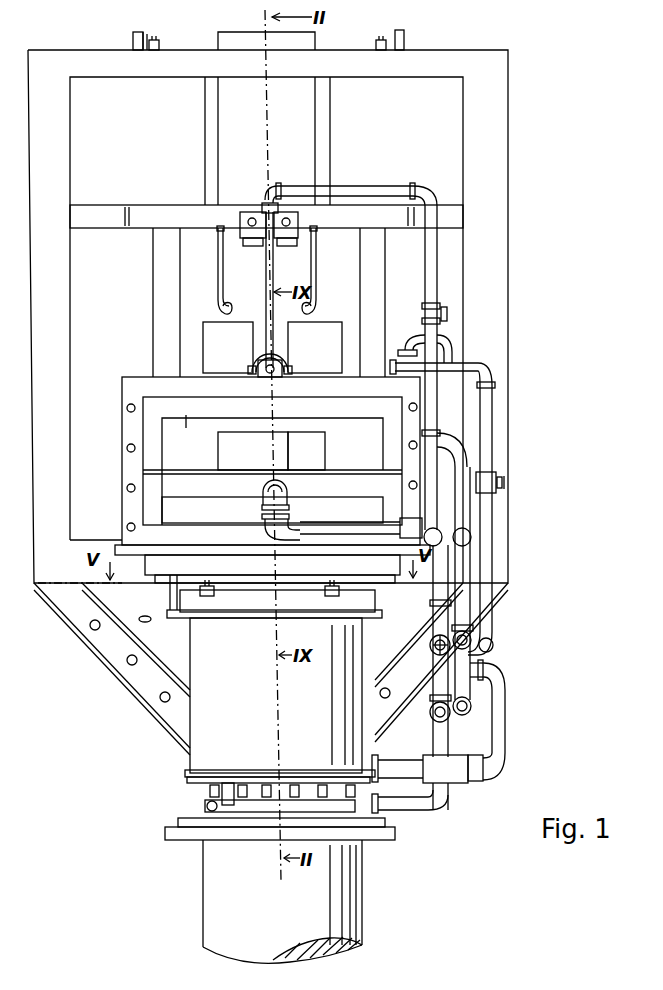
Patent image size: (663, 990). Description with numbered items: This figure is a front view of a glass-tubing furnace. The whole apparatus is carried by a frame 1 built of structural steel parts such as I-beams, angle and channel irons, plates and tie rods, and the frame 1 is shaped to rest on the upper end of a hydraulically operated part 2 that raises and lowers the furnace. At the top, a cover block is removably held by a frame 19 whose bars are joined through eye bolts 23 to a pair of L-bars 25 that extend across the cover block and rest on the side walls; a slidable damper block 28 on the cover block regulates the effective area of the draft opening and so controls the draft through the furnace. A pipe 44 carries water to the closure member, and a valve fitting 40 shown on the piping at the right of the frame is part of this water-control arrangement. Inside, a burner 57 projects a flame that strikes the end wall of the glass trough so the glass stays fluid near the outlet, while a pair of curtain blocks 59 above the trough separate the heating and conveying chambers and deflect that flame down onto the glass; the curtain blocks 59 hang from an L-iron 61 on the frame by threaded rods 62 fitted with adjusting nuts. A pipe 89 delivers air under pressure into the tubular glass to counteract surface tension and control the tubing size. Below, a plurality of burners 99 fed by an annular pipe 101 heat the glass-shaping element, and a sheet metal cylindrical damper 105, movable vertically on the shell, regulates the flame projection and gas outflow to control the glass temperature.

The frame 1 is at (500, 410).
The hydraulically operated part 2 is at (352, 902).
The frame 19 is at (147, 34).
The eye bolts 23 is at (159, 44).
The L-bars 25 is at (133, 40).
The slidable damper block 28 is at (236, 36).
The valve 40 is at (487, 483).
The pipe 44 is at (484, 427).
The burner 57 is at (262, 492).
The curtain blocks 59 is at (208, 340).
The L-iron 61 is at (156, 213).
The rods 62 is at (218, 252).
The pipe 89 is at (266, 262).
The burners 99 is at (210, 785).
The annular pipe 101 is at (205, 806).
The cylindrical damper 105 is at (215, 590).